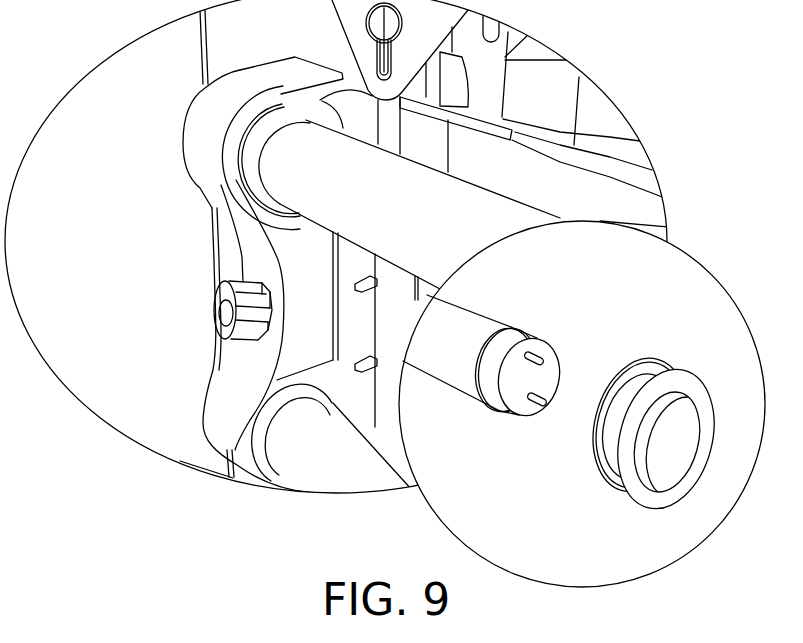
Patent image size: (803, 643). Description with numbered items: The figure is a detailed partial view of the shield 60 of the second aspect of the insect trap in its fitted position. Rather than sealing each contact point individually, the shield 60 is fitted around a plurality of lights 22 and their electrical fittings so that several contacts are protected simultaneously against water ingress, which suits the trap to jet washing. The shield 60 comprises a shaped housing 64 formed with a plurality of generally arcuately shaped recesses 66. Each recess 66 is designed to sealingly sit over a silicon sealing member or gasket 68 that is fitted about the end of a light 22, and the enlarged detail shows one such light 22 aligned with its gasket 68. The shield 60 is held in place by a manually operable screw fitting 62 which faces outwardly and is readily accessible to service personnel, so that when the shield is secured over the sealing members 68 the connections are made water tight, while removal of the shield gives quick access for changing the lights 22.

The light 22 is at (483, 316).
The shield 60 is at (185, 145).
The manually operable screw fitting 62 is at (222, 313).
The shaped housing 64 is at (205, 398).
The generally arcuately shaped recess 66 is at (280, 108).
The silicon sealing member or gasket 68 is at (250, 178).